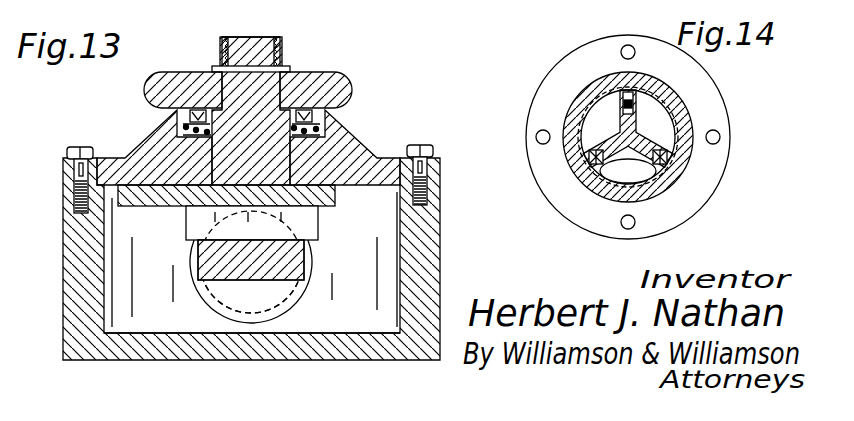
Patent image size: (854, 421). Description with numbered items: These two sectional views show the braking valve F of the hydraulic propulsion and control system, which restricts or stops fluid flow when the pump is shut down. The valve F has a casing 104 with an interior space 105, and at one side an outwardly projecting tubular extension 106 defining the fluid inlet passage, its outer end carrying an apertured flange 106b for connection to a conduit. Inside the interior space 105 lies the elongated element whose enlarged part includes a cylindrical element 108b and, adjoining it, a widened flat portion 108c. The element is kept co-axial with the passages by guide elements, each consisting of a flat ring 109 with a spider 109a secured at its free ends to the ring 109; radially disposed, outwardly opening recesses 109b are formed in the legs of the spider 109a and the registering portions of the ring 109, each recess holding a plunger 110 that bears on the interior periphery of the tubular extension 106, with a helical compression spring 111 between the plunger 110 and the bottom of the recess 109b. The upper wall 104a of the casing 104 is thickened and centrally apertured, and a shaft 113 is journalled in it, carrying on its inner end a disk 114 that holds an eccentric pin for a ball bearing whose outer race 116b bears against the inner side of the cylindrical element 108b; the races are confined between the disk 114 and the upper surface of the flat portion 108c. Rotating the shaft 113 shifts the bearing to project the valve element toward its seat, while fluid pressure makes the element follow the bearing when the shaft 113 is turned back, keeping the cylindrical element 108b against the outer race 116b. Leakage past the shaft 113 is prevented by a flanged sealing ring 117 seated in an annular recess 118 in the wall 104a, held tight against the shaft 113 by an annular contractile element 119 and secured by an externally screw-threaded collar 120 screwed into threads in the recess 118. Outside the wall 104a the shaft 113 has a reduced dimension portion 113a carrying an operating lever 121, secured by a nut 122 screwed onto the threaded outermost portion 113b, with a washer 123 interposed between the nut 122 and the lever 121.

In FIG. 13, the casing 104 is at (425, 245).
In FIG. 13, the upper wall 104a is at (347, 118).
In FIG. 13, the interior space 105 is at (187, 313).
In FIG. 14, the tubular extension 106 is at (667, 97).
In FIG. 14, the apertured flange 106b is at (673, 213).
In FIG. 13, the cylindrical element 108b is at (272, 293).
In FIG. 13, the flat portion 108c is at (290, 255).
In FIG. 14, the flat ring 109 is at (617, 181).
In FIG. 14, the spider 109a is at (628, 171).
In FIG. 14, the recesses 109b is at (587, 124).
In FIG. 14, the plunger 110 is at (635, 92).
In FIG. 14, the helical compression springs 111 is at (640, 112).
In FIG. 13, the shaft 113 is at (223, 162).
In FIG. 13, the reduced dimension portion 113a is at (232, 87).
In FIG. 13, the outermost portion 113b is at (272, 36).
In FIG. 13, the disk 114 is at (165, 193).
In FIG. 13, the outer race 116b is at (307, 219).
In FIG. 13, the flanged sealing ring 117 is at (190, 125).
In FIG. 13, the annular recess 118 is at (195, 133).
In FIG. 13, the annular contractile element 119 is at (300, 133).
In FIG. 13, the externally screw-threaded collar 120 is at (313, 110).
In FIG. 13, the operating lever 121 is at (340, 78).
In FIG. 13, the nut 122 is at (282, 40).
In FIG. 13, the washer 123 is at (283, 66).
In FIG. 13, the valve F is at (59, 241).